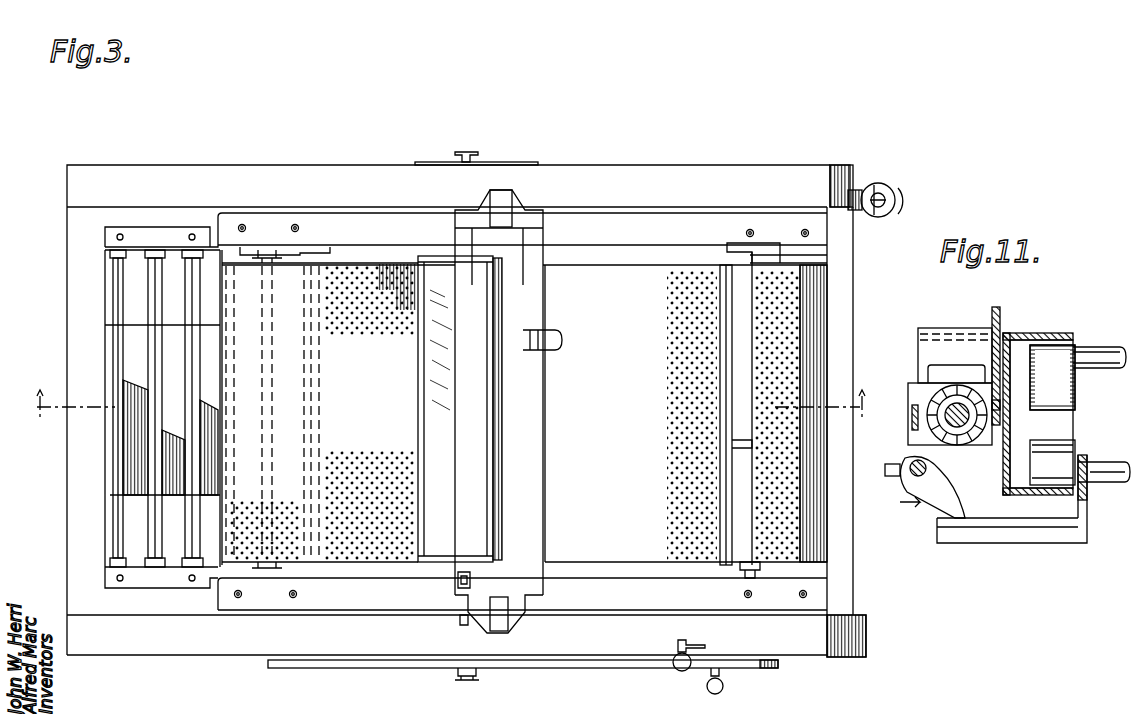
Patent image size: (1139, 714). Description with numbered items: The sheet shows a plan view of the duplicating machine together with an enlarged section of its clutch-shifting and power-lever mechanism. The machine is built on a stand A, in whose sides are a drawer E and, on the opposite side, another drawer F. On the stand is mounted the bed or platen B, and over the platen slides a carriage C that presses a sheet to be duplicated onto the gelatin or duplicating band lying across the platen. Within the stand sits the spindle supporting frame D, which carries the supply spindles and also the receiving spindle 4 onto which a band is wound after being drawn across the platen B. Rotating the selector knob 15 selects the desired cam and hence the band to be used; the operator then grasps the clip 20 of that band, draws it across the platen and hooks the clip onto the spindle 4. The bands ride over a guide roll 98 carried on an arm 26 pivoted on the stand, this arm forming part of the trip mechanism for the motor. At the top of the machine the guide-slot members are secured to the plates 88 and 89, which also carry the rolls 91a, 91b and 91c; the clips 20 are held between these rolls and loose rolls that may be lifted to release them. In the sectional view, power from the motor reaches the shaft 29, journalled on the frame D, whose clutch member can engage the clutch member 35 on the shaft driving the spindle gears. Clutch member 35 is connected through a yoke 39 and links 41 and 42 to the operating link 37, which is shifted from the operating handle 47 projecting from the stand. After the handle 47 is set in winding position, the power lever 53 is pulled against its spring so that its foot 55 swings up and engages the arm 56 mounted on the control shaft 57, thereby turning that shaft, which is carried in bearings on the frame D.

In FIG. 3, the selector knob 15 is at (866, 190).
In FIG. 3, the stand A is at (866, 637).
In FIG. 3, the drawer E is at (412, 661).
In FIG. 3, the drawer F is at (514, 164).
In FIG. 3, the bed or platen B is at (622, 262).
In FIG. 3, the plate 88 is at (149, 230).
In FIG. 3, the plate 89 is at (168, 582).
In FIG. 3, the roll 91a is at (125, 300).
In FIG. 3, the roll 91b is at (203, 262).
In FIG. 3, the roll 91c is at (155, 305).
In FIG. 3, the clip 20 is at (155, 356).
In FIG. 3, the arm 26 is at (298, 255).
In FIG. 3, the guide roll 98 is at (292, 255).
In FIG. 3, the carriage C is at (432, 421).
In FIG. 3, the power lever 53 is at (676, 648).
In FIG. 3, the operating handle 47 is at (733, 677).
In FIG. 3, the receiving spindle 4 is at (866, 578).
In FIG. 11, the operating link 37 is at (992, 312).
In FIG. 11, the yoke 39 is at (925, 352).
In FIG. 11, the link 41 is at (910, 410).
In FIG. 11, the link 42 is at (990, 440).
In FIG. 11, the shaft 29 is at (956, 402).
In FIG. 11, the clutch member 35 is at (947, 421).
In FIG. 11, the spindle supporting frame D is at (1043, 335).
In FIG. 11, the foot 55 is at (1025, 532).
In FIG. 11, the arm 56 is at (945, 503).
In FIG. 11, the control shaft 57 is at (912, 473).